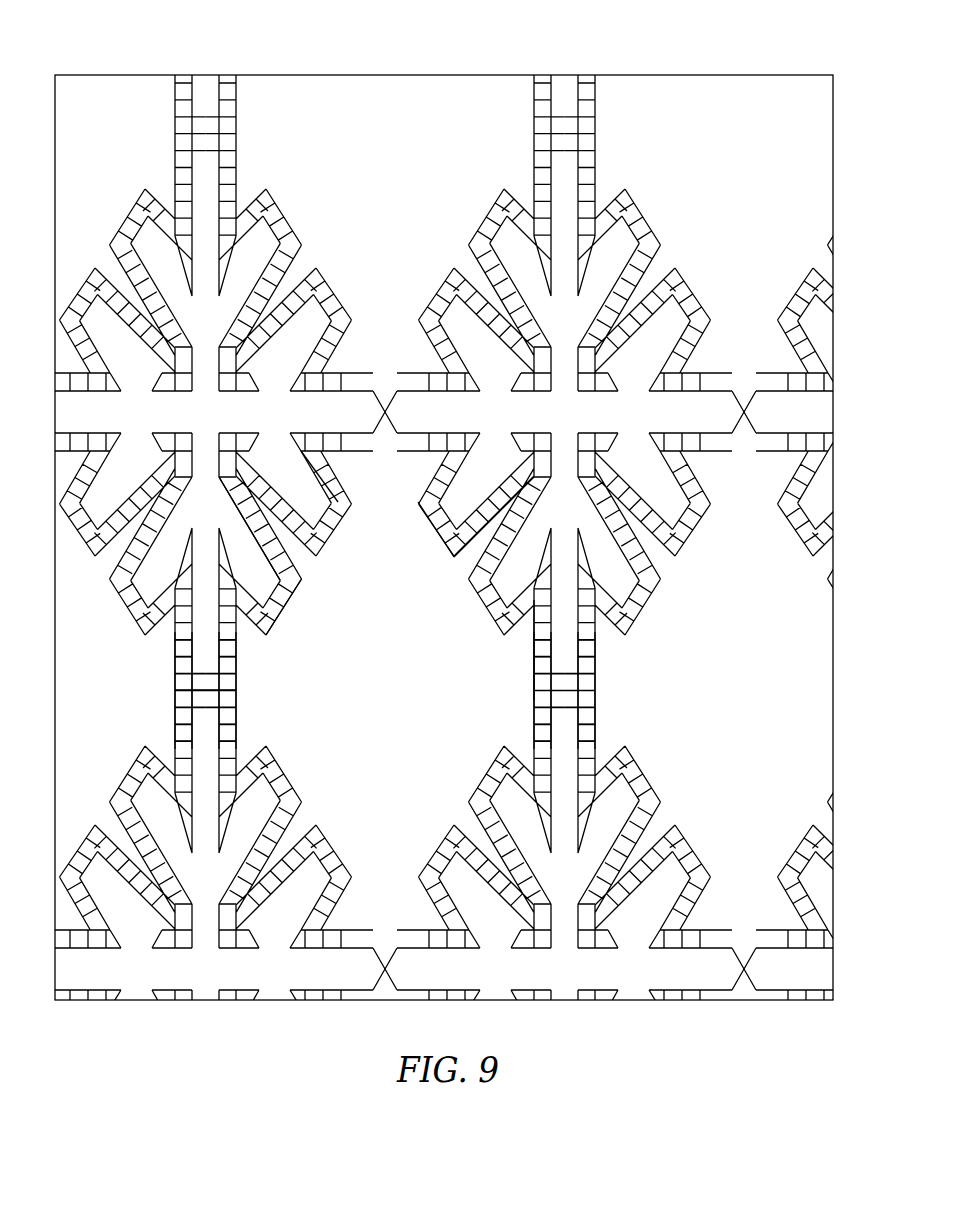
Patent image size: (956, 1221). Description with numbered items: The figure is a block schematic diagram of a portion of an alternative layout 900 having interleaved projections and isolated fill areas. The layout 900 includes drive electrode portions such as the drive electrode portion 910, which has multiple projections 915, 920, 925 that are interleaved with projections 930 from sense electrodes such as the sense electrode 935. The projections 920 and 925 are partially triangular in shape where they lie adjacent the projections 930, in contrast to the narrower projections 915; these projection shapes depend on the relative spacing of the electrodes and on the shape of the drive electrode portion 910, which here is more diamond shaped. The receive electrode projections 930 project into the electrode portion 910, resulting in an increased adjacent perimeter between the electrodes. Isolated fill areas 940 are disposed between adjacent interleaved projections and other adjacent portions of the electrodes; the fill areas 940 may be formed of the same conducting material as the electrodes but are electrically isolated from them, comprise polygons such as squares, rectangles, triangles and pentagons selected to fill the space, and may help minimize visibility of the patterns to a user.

The alternative layout 900 is at (728, 38).
The drive electrode portion 910 is at (402, 712).
The projection 915 is at (467, 555).
The projection 920 is at (347, 468).
The projection 925 is at (245, 630).
The projection 930 is at (268, 583).
The sense electrode 935 is at (207, 647).
The isolated fill area 940 is at (545, 648).